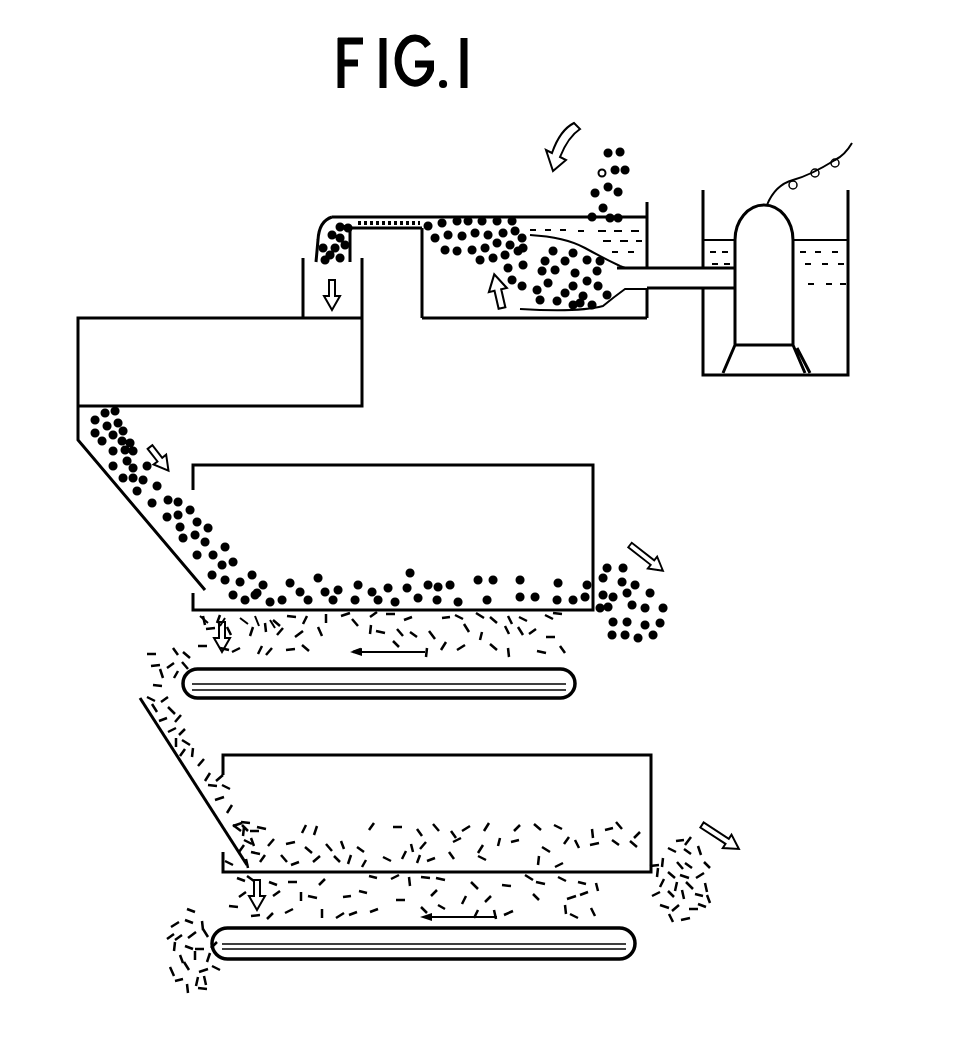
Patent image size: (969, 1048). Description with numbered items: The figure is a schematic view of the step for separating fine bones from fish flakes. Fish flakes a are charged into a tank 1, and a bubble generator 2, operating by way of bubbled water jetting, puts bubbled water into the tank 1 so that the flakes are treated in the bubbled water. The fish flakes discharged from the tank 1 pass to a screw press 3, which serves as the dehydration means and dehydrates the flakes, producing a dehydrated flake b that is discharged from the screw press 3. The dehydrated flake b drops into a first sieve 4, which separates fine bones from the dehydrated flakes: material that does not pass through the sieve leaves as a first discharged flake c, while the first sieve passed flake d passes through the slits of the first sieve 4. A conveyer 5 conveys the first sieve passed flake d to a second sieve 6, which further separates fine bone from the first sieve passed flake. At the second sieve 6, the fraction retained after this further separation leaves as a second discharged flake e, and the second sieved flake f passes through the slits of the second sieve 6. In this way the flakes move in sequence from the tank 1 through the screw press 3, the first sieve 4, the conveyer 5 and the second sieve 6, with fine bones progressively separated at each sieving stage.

The tank 1 is at (445, 293).
The bubble generator 2 is at (750, 223).
The screw press 3 is at (118, 357).
The first sieve 4 is at (527, 485).
The conveyer 5 is at (576, 678).
The second sieve 6 is at (613, 782).
The fish flakes a is at (618, 140).
The dehydrated flake b is at (122, 444).
The first discharged flake c is at (668, 602).
The first sieve passed flake d is at (177, 660).
The second discharged flake e is at (706, 897).
The second sieved flake f is at (179, 956).